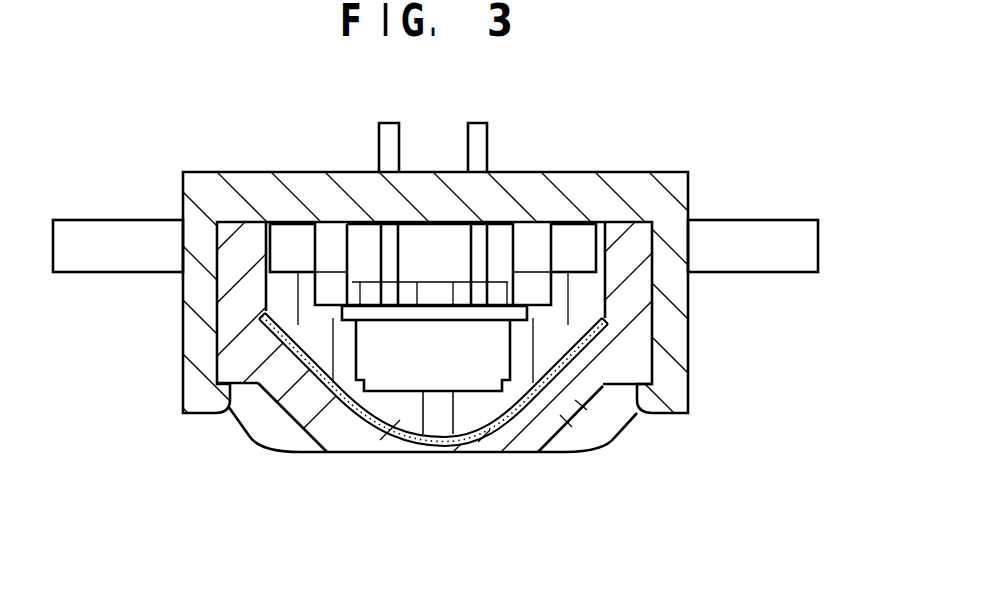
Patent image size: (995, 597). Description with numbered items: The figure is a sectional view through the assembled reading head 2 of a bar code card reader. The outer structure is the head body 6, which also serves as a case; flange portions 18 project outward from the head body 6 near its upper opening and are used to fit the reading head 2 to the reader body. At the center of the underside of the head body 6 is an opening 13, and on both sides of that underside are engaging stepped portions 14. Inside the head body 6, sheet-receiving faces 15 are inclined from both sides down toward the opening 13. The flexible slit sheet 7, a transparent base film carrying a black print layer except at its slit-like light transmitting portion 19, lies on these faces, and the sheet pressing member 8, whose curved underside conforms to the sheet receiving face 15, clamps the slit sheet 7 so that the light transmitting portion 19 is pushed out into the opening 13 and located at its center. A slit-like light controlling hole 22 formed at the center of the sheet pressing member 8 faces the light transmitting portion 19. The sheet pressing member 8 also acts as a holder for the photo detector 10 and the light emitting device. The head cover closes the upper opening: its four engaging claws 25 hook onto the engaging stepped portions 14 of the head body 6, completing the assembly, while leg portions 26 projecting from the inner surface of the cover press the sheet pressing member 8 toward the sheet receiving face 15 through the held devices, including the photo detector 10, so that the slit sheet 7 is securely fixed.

The reading head 2 is at (650, 166).
The head body 6 is at (578, 398).
The slit sheet 7 is at (600, 353).
The sheet pressing member 8 is at (510, 422).
The photo detector 10 is at (387, 380).
The opening 13 is at (466, 445).
The engaging stepped portion 14 is at (248, 388).
The sheet-receiving face 15 is at (308, 387).
The flange portion 18 is at (95, 226).
The light transmitting portion 19 is at (437, 452).
The light controlling hole 22 is at (427, 425).
The engaging claw 25 is at (192, 327).
The leg portion 26 is at (333, 278).